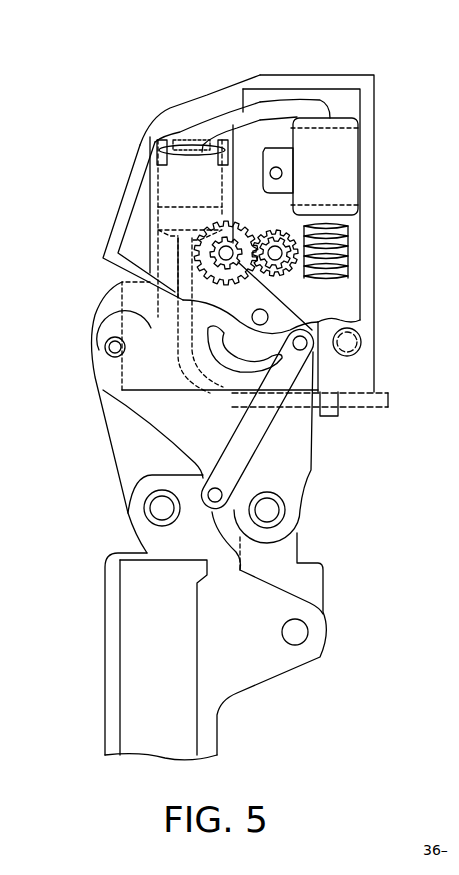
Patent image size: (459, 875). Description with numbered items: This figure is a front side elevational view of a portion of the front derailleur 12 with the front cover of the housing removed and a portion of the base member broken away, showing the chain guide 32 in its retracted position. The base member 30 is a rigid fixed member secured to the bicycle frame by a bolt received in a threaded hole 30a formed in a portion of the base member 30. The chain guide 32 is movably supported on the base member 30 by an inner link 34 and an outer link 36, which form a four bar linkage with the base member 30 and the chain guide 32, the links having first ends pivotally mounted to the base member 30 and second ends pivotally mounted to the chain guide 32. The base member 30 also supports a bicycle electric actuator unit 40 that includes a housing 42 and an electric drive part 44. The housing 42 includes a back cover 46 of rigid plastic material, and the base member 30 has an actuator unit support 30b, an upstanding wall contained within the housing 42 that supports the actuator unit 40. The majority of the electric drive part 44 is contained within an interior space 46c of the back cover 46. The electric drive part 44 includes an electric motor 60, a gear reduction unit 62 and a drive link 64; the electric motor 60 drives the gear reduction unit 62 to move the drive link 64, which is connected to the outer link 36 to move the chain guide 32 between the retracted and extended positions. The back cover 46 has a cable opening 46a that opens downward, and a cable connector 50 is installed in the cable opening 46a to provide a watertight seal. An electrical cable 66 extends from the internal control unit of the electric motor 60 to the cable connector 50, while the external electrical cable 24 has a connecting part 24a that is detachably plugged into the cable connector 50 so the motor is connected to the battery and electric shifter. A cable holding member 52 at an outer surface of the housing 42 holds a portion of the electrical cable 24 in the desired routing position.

The front derailleur 12 is at (155, 85).
The electrical cable 24 is at (360, 407).
The connecting part 24a is at (185, 247).
The base member 30 is at (310, 482).
The threaded hole 30a is at (360, 350).
The actuator unit support 30b is at (143, 305).
The chain guide 32 is at (104, 695).
The inner link 34 is at (300, 547).
The outer link 36 is at (117, 453).
The bicycle electric actuator unit 40 is at (337, 75).
The housing 42 is at (375, 231).
The electric drive part 44 is at (253, 184).
The back cover 46 is at (305, 83).
The cable opening 46a is at (160, 140).
The interior space 46c is at (340, 102).
The cable connector 50 is at (145, 182).
The cable holding member 52 is at (330, 421).
The electric motor 60 is at (327, 160).
The gear reduction unit 62 is at (355, 262).
The drive link 64 is at (232, 417).
The electrical cable 66 is at (263, 108).